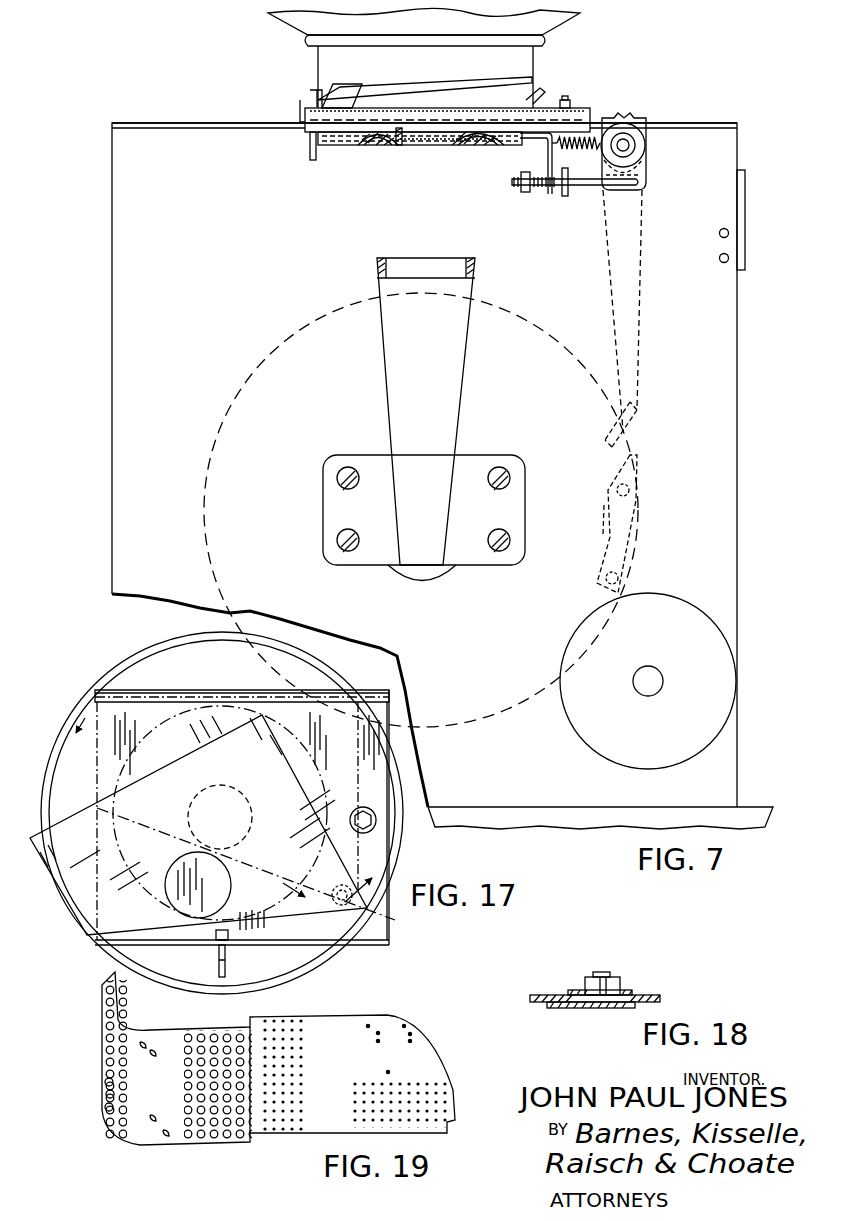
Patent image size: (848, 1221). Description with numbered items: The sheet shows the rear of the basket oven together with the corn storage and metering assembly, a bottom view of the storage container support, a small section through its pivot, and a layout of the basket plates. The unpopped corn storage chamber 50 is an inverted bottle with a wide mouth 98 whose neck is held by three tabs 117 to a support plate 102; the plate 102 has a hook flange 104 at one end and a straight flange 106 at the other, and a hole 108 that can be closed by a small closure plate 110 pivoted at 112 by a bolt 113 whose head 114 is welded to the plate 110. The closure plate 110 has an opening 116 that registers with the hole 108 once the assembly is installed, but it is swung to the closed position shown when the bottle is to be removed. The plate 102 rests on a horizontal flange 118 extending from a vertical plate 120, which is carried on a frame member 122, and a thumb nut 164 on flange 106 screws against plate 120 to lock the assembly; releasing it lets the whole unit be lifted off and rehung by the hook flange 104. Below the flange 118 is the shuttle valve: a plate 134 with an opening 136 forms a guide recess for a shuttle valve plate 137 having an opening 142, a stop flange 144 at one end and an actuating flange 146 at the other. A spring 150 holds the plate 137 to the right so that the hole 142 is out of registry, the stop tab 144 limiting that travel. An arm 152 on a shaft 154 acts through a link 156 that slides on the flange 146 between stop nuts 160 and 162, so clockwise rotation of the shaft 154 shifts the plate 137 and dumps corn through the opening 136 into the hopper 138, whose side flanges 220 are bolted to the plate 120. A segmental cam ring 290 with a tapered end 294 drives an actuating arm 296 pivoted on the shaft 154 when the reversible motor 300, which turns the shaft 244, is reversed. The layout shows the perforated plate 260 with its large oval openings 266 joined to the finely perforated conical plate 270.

In FIG. 17, the unpopped corn storage chamber 50 is at (142, 665).
In FIG. 7, the wide mouth 98 is at (332, 65).
In FIG. 17, the support plate 102 is at (216, 710).
In FIG. 17, the hook flange 104 is at (326, 690).
In FIG. 17, the straight flange 106 is at (336, 946).
In FIG. 17, the hole 108 is at (218, 790).
In FIG. 7, the closure plate 110 is at (300, 112).
In FIG. 17, the closure plate 110 is at (80, 918).
In FIG. 18, the closure plate 110 is at (560, 1009).
In FIG. 17, the pivot 112 is at (368, 906).
In FIG. 18, the bolt 113 is at (604, 975).
In FIG. 18, the head 114 is at (614, 990).
In FIG. 17, the opening 116 is at (174, 870).
In FIG. 7, the tabs 117 is at (345, 88).
In FIG. 7, the horizontal flange 118 is at (143, 122).
In FIG. 7, the vertical plate 120 is at (112, 224).
In FIG. 7, the frame member 122 is at (560, 826).
In FIG. 7, the plate 134 is at (362, 142).
In FIG. 7, the opening 136 is at (432, 146).
In FIG. 7, the shuttle valve plate 137 is at (408, 146).
In FIG. 7, the opening 142 is at (464, 144).
In FIG. 7, the stop flange 144 is at (310, 150).
In FIG. 7, the actuating flange 146 is at (553, 195).
In FIG. 7, the spring 150 is at (584, 132).
In FIG. 7, the arm 152 is at (645, 170).
In FIG. 7, the shaft 154 is at (630, 143).
In FIG. 7, the link 156 is at (593, 192).
In FIG. 7, the stop nut 160 is at (522, 188).
In FIG. 7, the stop nut 162 is at (576, 166).
In FIG. 17, the thumb nut 164 is at (219, 968).
In FIG. 7, the side flanges 220 is at (333, 470).
In FIG. 7, the shaft 244 is at (650, 696).
In FIG. 19, the perforated plate 260 is at (106, 1060).
In FIG. 19, the openings 266 is at (105, 1107).
In FIG. 19, the curved plate 270 is at (386, 1036).
In FIG. 7, the segmental cam ring 290 is at (604, 547).
In FIG. 7, the tapered end 294 is at (618, 462).
In FIG. 7, the actuating arm 296 is at (636, 302).
In FIG. 7, the motor 300 is at (665, 596).
In FIG. 7, the hopper 138 is at (462, 300).